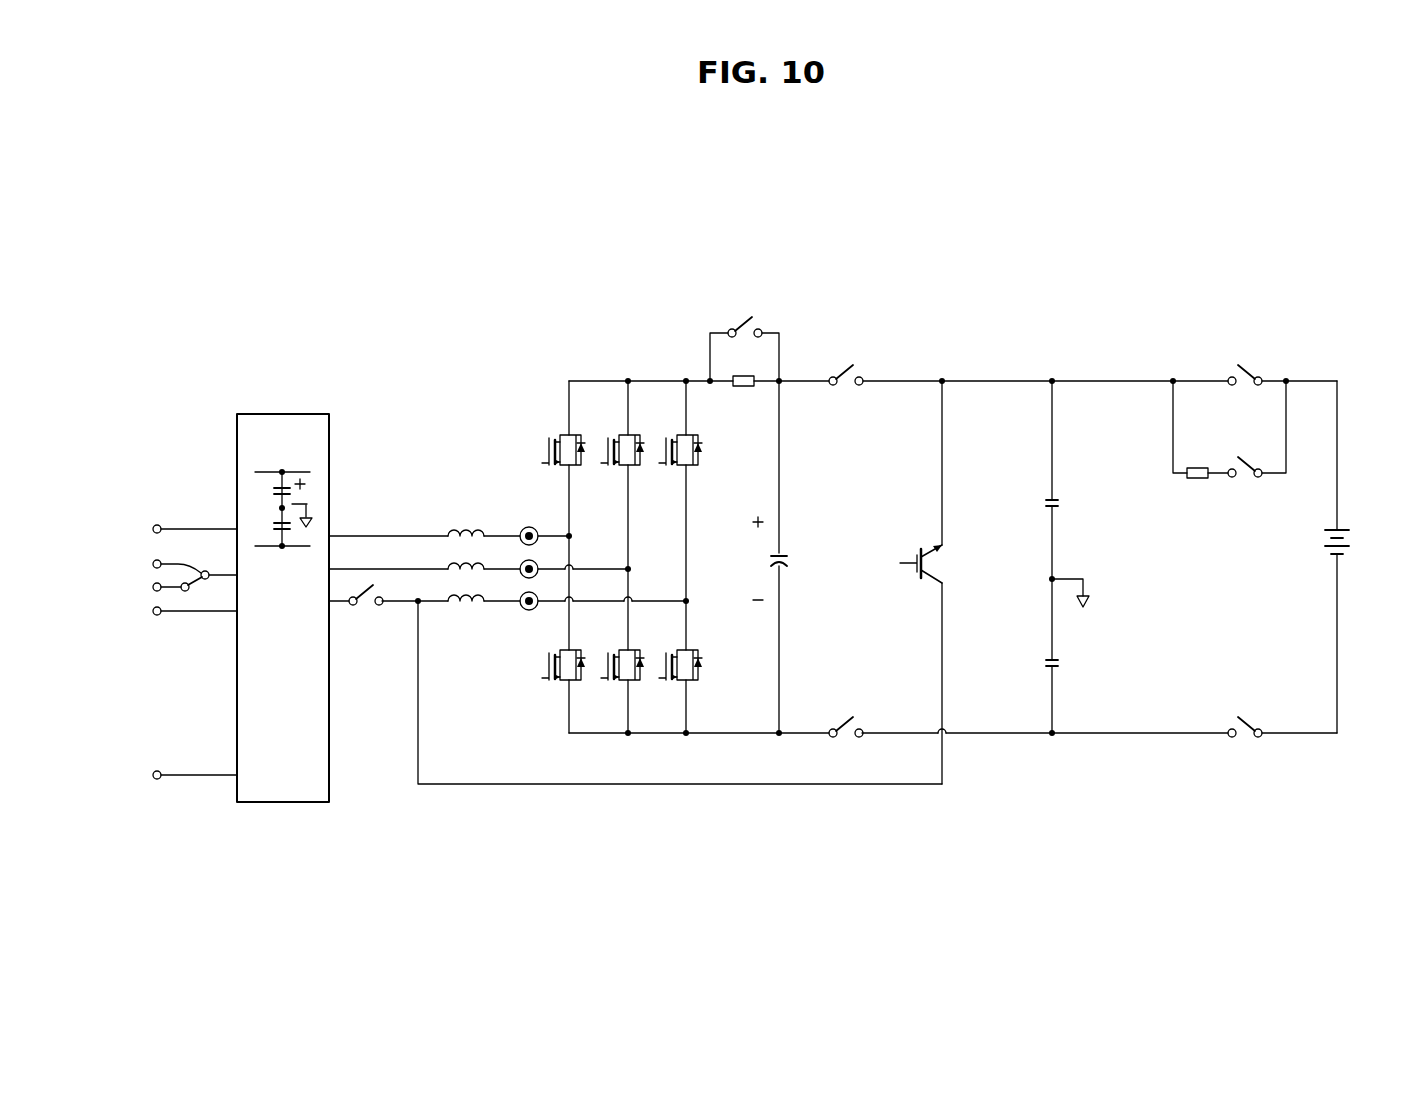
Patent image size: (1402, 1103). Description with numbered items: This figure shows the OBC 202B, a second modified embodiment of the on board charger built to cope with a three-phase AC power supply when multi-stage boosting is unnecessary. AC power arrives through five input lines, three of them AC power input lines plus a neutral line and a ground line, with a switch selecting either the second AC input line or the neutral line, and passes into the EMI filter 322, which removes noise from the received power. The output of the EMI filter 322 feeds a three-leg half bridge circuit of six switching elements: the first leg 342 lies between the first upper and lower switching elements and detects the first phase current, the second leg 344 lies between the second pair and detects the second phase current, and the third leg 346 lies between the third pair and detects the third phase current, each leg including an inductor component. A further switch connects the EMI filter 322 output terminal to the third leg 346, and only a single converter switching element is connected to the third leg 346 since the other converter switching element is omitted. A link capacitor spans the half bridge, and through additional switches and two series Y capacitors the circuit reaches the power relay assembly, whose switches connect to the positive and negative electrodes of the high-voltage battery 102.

The OBC of the second modified embodiment 202B is at (448, 233).
The EMI filter 322 is at (282, 803).
The first leg 342 is at (590, 536).
The second leg 344 is at (648, 569).
The third leg 346 is at (706, 601).
The high-voltage battery 102 is at (1344, 526).